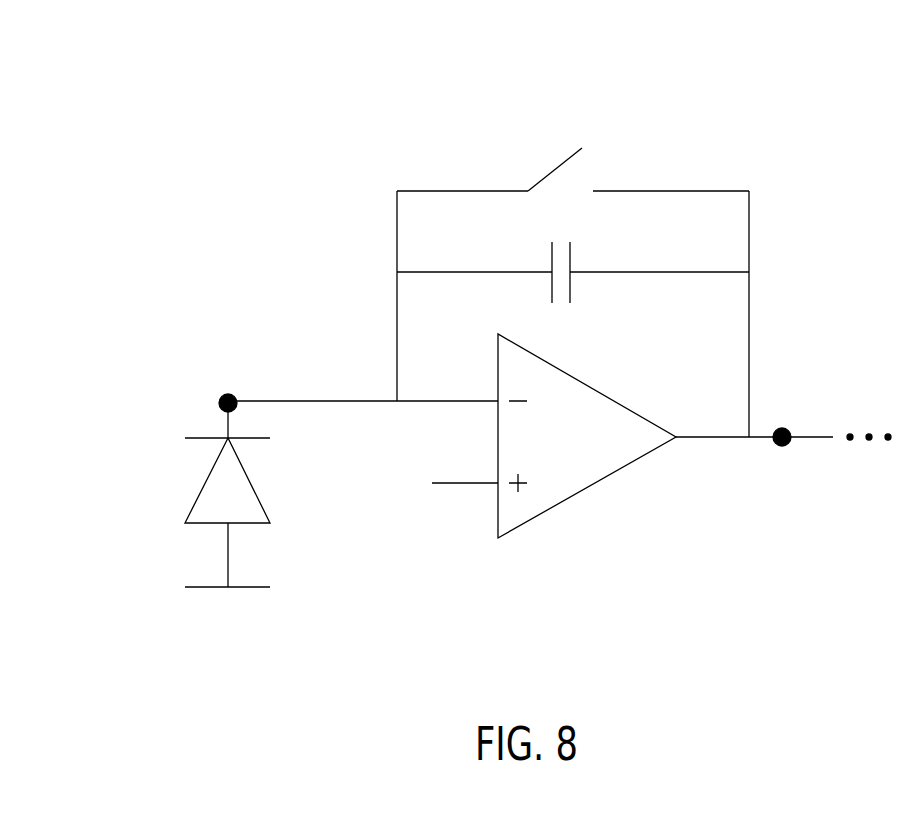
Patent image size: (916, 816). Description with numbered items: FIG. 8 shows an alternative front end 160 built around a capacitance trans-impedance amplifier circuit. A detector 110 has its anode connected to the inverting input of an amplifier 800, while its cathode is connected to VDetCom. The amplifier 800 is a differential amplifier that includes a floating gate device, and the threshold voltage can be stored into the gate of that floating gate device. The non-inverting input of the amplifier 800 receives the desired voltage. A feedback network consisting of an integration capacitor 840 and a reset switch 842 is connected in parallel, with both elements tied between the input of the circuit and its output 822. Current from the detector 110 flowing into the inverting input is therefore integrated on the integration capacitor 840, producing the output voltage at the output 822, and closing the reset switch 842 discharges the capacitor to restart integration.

The detector circuit 160 is at (76, 112).
The amplifier 800 is at (782, 105).
The reset switch 842 is at (548, 173).
The integration capacitor 840 is at (571, 280).
The output 822 is at (228, 395).
The detector 110 is at (205, 483).